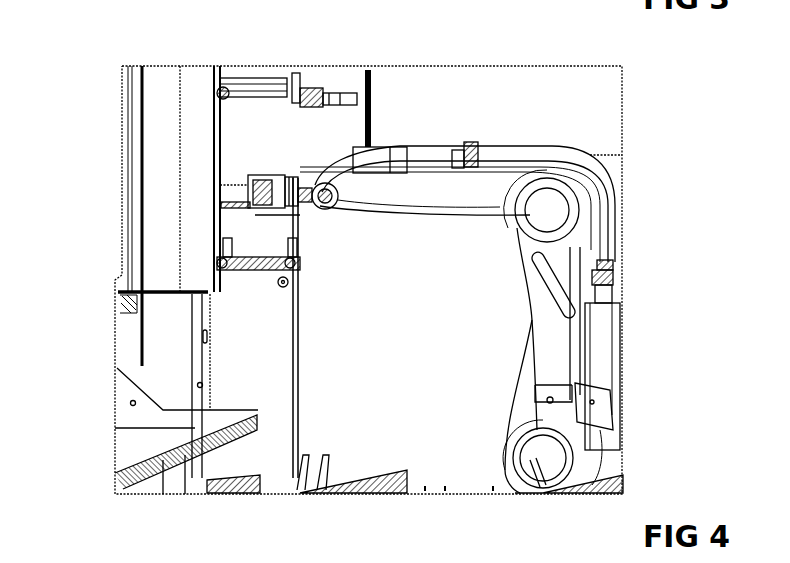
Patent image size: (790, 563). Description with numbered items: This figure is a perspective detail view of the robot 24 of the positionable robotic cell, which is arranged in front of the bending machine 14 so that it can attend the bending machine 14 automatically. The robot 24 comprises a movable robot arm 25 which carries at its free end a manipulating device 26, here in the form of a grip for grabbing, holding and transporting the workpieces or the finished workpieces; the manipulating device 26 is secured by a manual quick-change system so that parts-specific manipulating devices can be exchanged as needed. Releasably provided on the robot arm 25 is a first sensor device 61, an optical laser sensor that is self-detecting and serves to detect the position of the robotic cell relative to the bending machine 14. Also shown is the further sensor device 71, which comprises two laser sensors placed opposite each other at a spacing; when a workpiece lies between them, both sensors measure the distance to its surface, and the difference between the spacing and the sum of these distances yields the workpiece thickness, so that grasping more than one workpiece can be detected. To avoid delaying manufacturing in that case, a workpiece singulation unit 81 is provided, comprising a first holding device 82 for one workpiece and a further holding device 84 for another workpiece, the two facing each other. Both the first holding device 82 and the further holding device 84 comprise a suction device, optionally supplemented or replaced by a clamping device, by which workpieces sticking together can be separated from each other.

The bending machine 14 is at (588, 131).
The robot 24 is at (552, 317).
The robot arm 25 is at (448, 182).
The manipulating device 26 is at (268, 175).
The first sensor device 61 is at (378, 145).
The further sensor device 71 is at (153, 274).
The workpiece singulation unit 81 is at (183, 140).
The first holding device 82 is at (250, 92).
The further holding device 84 is at (222, 257).